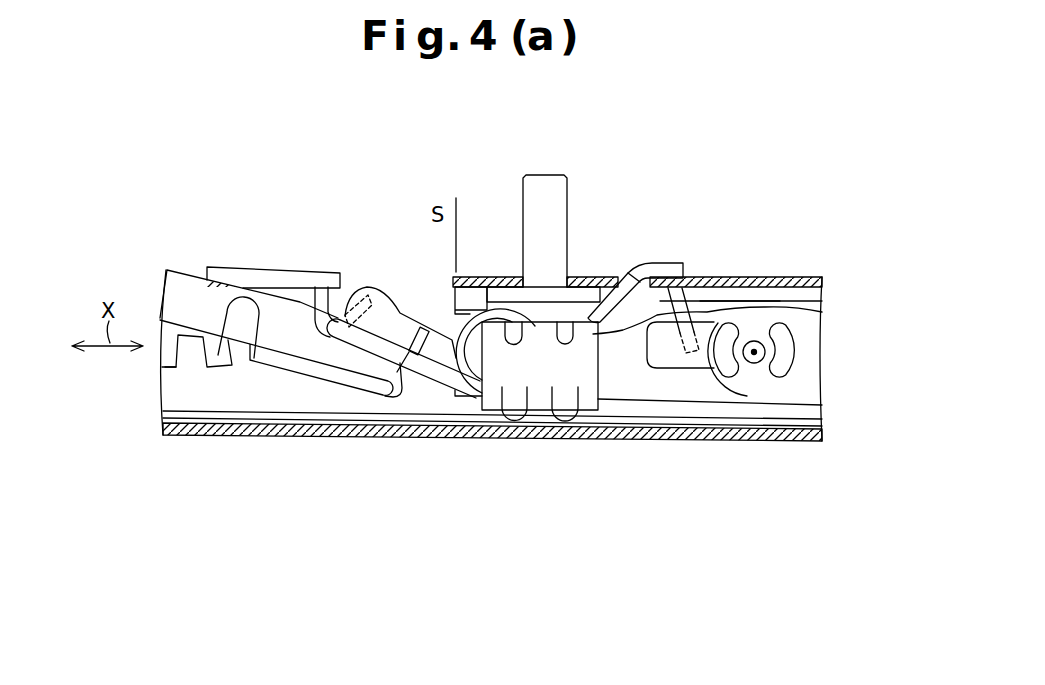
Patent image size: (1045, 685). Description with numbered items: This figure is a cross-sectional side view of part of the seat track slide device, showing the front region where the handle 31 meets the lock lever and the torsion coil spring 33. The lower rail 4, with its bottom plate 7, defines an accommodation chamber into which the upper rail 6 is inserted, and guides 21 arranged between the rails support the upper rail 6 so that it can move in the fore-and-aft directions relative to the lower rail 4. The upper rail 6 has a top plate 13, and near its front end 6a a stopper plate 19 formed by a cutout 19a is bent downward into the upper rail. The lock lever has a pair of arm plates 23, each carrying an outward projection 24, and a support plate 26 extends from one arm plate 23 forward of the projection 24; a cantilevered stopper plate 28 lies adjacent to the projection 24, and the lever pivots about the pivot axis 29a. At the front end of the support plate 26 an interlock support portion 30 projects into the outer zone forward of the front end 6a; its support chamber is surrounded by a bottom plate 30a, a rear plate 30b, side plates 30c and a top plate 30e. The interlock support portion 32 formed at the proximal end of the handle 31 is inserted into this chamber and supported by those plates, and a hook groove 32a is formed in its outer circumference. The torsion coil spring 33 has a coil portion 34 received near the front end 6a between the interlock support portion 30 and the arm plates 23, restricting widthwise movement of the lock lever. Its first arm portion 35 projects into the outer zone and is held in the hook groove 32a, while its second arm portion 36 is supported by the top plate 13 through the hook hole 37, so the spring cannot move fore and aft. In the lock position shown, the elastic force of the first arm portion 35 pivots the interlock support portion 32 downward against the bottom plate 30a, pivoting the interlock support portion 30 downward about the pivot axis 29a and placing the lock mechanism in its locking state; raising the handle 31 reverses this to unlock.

The lower rail 4 is at (696, 450).
The upper rail 6 is at (810, 272).
The front end 6a is at (460, 282).
The bottom plate 7 is at (663, 437).
The top plate 13 is at (583, 277).
The stopper plate 19 is at (680, 290).
The cutout 19a is at (735, 281).
The guides 21 is at (540, 407).
The arm plates 23 is at (805, 378).
The projection 24 is at (754, 357).
The support plate 26 is at (617, 385).
The stopper plate 28 is at (662, 355).
The pivot axis 29a is at (766, 350).
The interlock support portion 30 is at (302, 378).
The bottom plate 30a is at (352, 393).
The rear plate 30b is at (408, 400).
The side plate 30c is at (216, 360).
The top plate 30e is at (267, 275).
The handle 31 is at (185, 259).
The interlock support portion 32 is at (277, 342).
The hook groove 32a is at (325, 290).
The torsion coil spring 33 is at (450, 332).
The coil portion 34 is at (545, 302).
The first arm portion 35 is at (437, 372).
The second arm portion 36 is at (665, 262).
The hook hole 37 is at (620, 282).